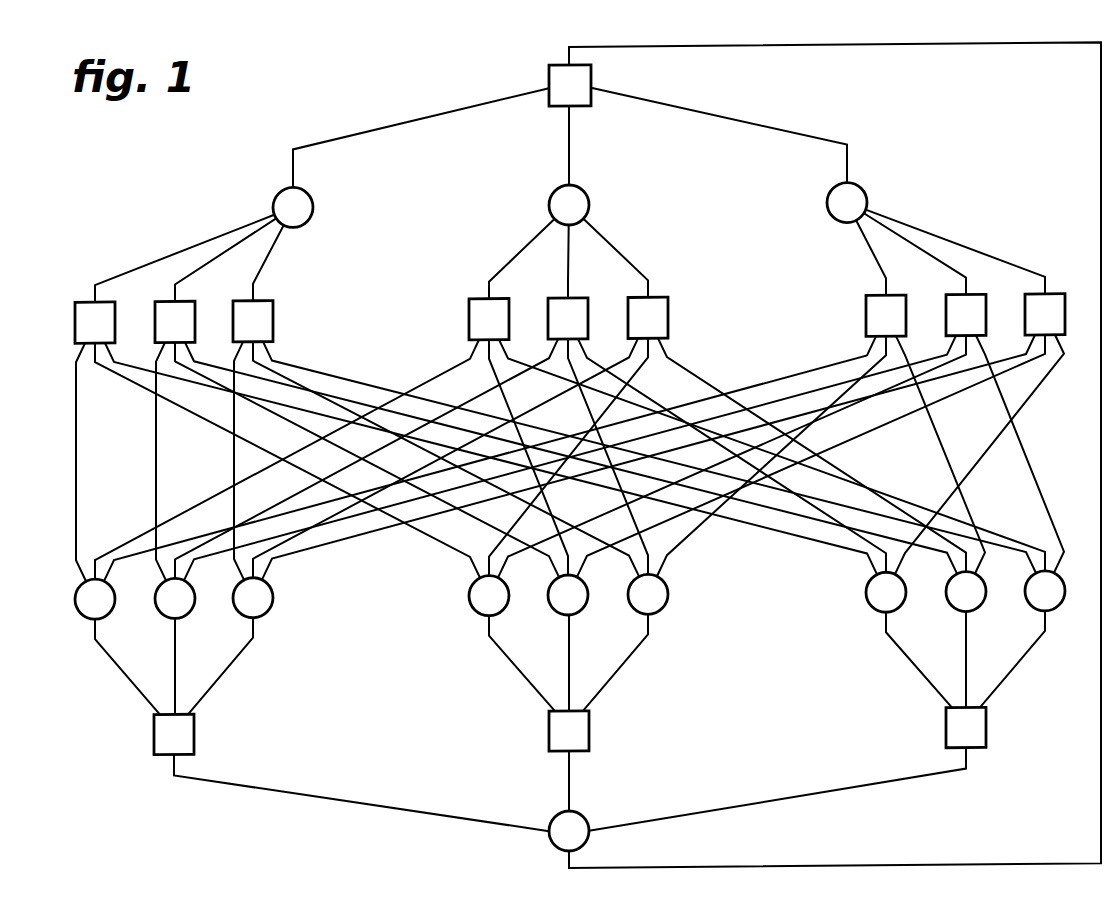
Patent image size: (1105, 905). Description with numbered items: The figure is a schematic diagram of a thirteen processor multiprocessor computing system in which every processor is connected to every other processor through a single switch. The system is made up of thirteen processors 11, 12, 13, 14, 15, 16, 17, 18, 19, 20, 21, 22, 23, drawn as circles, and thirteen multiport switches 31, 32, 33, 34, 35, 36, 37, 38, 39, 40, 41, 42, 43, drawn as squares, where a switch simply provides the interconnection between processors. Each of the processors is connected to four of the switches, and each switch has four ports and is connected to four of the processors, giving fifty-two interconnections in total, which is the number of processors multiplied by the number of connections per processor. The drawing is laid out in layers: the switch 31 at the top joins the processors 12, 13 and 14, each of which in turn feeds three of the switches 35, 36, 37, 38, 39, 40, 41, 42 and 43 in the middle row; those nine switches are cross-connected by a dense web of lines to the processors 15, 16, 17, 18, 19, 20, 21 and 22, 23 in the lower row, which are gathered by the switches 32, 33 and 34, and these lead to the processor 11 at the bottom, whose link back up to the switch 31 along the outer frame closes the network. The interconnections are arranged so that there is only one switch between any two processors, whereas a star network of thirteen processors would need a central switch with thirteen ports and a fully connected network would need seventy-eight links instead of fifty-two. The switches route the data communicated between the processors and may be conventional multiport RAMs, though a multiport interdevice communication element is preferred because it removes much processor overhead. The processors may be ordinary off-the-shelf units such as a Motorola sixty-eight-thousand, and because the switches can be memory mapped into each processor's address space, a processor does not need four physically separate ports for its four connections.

The processor 11 is at (557, 842).
The processor 12 is at (281, 216).
The processor 13 is at (557, 216).
The processor 14 is at (835, 216).
The processor 15 is at (83, 606).
The processor 16 is at (163, 606).
The processor 17 is at (241, 606).
The processor 18 is at (477, 606).
The processor 19 is at (556, 606).
The processor 20 is at (636, 606).
The processor 21 is at (874, 606).
The processor 22 is at (954, 606).
The processor 23 is at (1033, 606).
The multiport switch 31 is at (558, 96).
The multiport switch 32 is at (162, 742).
The multiport switch 33 is at (557, 742).
The multiport switch 34 is at (954, 742).
The multiport switch 35 is at (83, 329).
The multiport switch 36 is at (163, 329).
The multiport switch 37 is at (241, 329).
The multiport switch 38 is at (477, 329).
The multiport switch 39 is at (556, 329).
The multiport switch 40 is at (636, 329).
The multiport switch 41 is at (874, 329).
The multiport switch 42 is at (954, 329).
The multiport switch 43 is at (1033, 329).